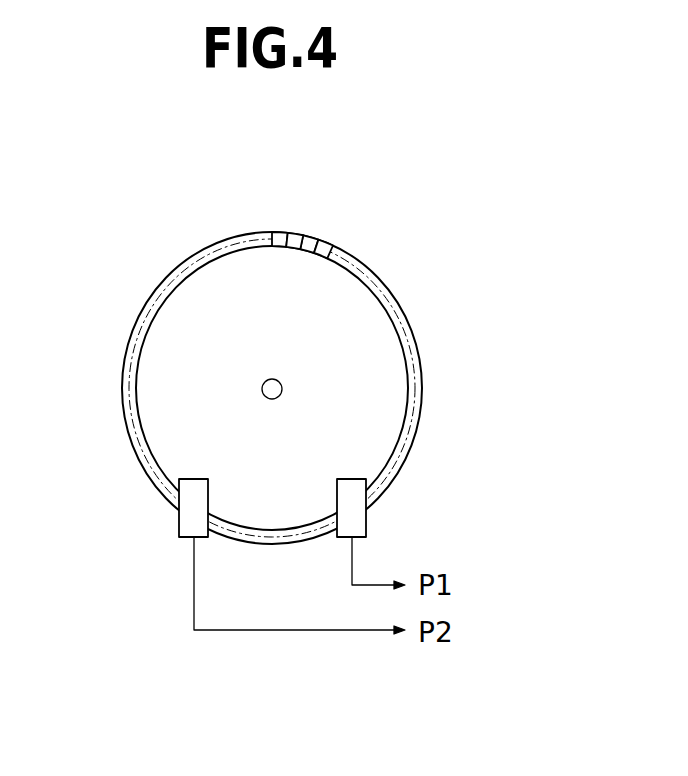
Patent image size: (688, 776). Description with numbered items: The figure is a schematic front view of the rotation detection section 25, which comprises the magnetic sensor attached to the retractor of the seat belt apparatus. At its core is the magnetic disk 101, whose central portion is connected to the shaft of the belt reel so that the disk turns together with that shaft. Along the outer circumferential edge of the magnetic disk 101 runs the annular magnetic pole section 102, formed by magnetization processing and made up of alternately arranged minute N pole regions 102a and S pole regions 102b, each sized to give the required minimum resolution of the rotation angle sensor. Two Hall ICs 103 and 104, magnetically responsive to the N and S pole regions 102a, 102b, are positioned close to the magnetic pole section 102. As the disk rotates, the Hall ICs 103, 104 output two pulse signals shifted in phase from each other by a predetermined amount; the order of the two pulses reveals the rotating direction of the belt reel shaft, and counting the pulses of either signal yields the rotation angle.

The rotation detection section 25 is at (160, 262).
The magnetic disk 101 is at (358, 322).
The annular magnetic pole section 102 is at (415, 345).
The N pole region 102a is at (282, 230).
The S pole region 102b is at (297, 231).
The Hall IC 103 is at (353, 522).
The Hall IC 104 is at (192, 519).